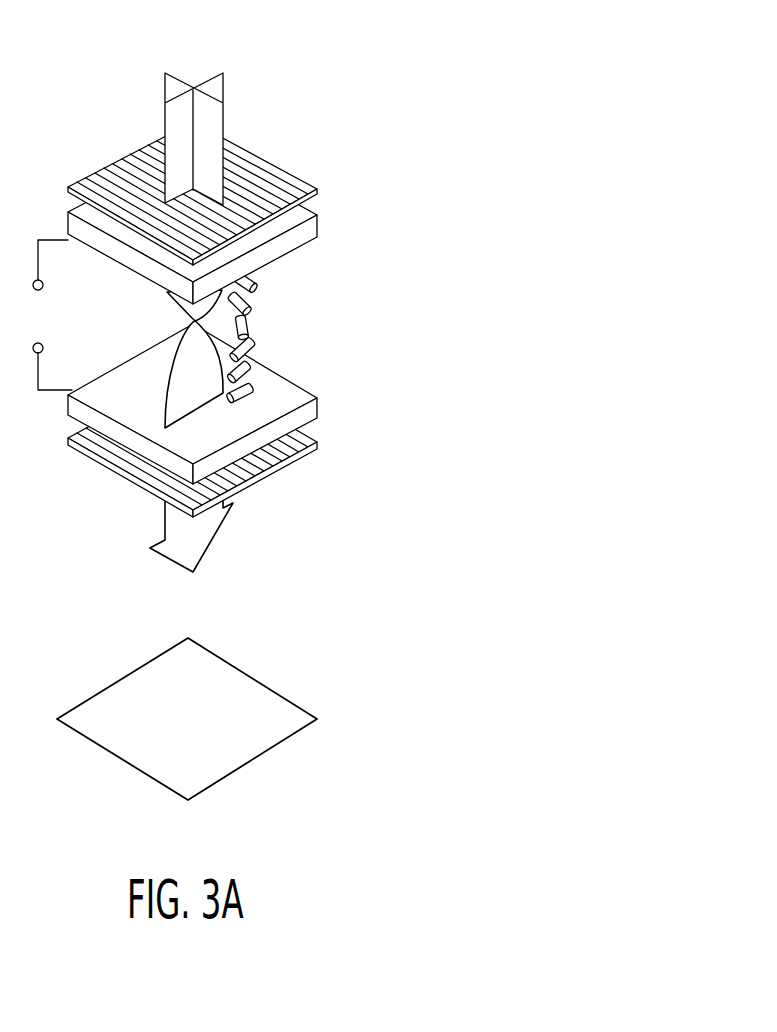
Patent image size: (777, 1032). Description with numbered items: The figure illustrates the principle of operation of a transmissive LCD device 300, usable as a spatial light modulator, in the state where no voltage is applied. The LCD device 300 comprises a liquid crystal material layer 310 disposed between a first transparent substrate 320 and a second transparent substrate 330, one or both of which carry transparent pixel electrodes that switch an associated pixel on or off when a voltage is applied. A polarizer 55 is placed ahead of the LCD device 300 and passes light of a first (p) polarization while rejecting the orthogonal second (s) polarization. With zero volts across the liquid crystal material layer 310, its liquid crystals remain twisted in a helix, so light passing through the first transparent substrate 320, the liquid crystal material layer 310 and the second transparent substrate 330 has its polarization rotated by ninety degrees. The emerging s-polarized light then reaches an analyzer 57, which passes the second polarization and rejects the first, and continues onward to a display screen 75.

The LCD device 300 is at (233, 290).
The polarizer 55 is at (317, 188).
The first transparent substrate 320 is at (317, 226).
The liquid crystal material layer 310 is at (253, 323).
The second transparent substrate 330 is at (317, 407).
The analyzer 57 is at (317, 453).
The display screen 75 is at (297, 702).